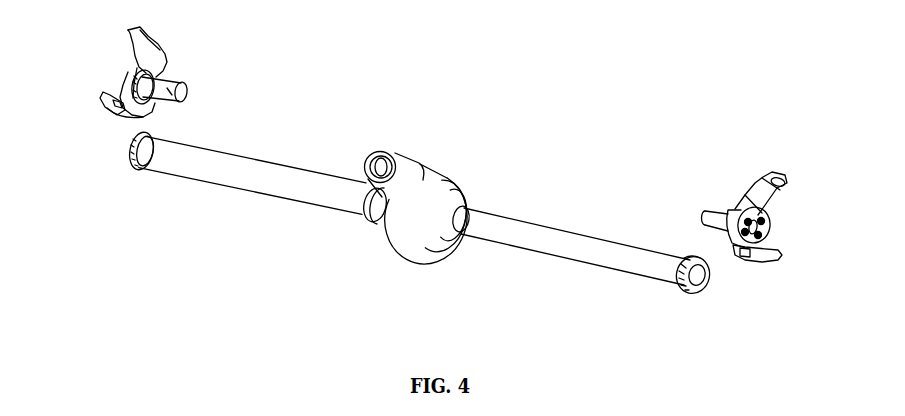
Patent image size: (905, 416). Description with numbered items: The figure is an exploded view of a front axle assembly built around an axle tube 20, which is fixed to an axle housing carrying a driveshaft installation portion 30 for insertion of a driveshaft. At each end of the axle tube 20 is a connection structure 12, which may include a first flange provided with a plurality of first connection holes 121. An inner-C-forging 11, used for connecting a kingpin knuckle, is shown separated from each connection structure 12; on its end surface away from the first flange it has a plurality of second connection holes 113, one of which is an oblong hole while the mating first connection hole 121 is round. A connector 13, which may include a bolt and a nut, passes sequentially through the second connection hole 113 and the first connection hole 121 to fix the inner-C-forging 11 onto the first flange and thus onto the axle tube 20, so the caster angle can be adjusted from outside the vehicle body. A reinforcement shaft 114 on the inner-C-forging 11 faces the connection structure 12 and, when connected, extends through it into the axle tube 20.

The inner-C-forging 11 is at (155, 54).
The connection structure 12 is at (122, 143).
The first connection hole 121 is at (690, 259).
The connector 13 is at (123, 68).
The second connection hole 113 is at (742, 194).
The reinforcement shaft 114 is at (183, 83).
The axle tube 20 is at (245, 171).
The driveshaft installation portion 30 is at (381, 165).